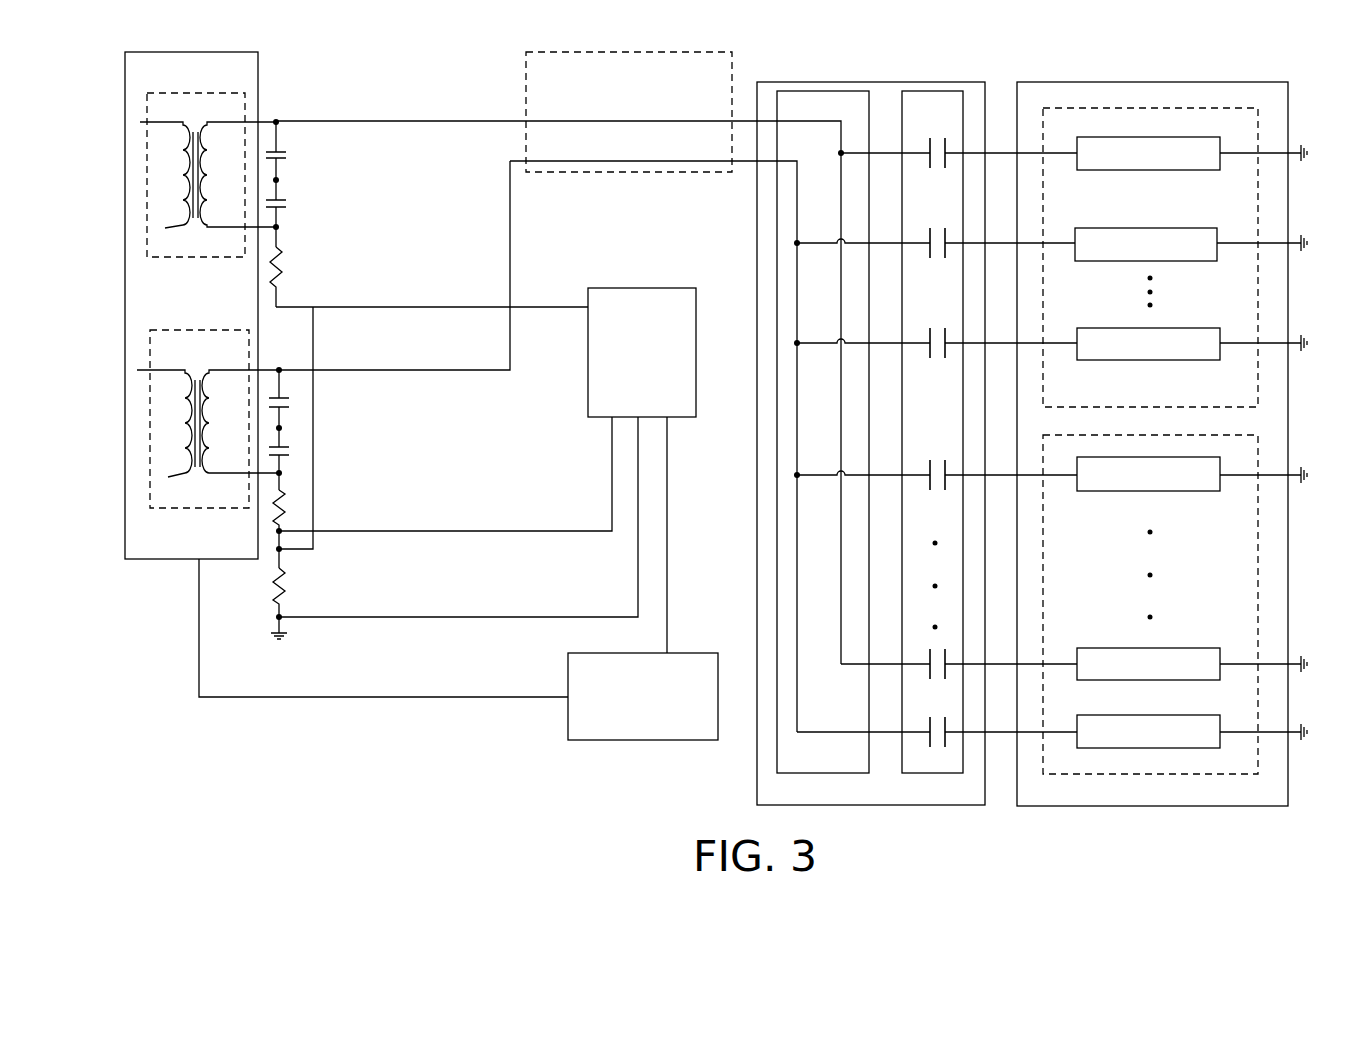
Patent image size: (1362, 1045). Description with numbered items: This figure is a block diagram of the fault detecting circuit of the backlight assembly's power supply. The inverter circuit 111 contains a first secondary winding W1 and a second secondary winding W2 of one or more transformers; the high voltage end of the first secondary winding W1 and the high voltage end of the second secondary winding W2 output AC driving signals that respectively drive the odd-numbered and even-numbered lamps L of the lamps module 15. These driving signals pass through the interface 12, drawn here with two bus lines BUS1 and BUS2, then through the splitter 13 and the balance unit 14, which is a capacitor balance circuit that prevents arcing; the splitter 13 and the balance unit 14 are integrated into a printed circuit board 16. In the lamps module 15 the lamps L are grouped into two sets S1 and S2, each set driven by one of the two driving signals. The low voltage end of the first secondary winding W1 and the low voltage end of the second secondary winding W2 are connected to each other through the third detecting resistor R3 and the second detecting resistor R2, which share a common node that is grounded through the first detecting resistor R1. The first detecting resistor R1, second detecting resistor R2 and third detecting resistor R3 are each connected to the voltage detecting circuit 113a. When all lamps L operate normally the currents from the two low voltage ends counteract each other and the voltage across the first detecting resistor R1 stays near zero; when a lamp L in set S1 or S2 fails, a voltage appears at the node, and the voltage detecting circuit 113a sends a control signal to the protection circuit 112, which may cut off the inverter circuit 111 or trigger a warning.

The inverter circuit 111 is at (228, 52).
The interface 12 is at (568, 52).
The splitter 13 is at (848, 91).
The balance unit 14 is at (922, 97).
The lamps module 15 is at (1058, 82).
The printed circuit board 16 is at (783, 82).
The voltage detecting circuit 113a is at (662, 288).
The protection circuit 112 is at (637, 741).
The first secondary winding W1 is at (222, 116).
The second secondary winding W2 is at (225, 366).
The first detecting resistor R1 is at (291, 600).
The second detecting resistor R2 is at (290, 510).
The third detecting resistor R3 is at (287, 277).
The first bus BUS1 is at (577, 121).
The second bus BUS2 is at (578, 161).
The first set of lamps S1 is at (1167, 107).
The second set of lamps S2 is at (1167, 435).
The lamp L is at (1147, 137).